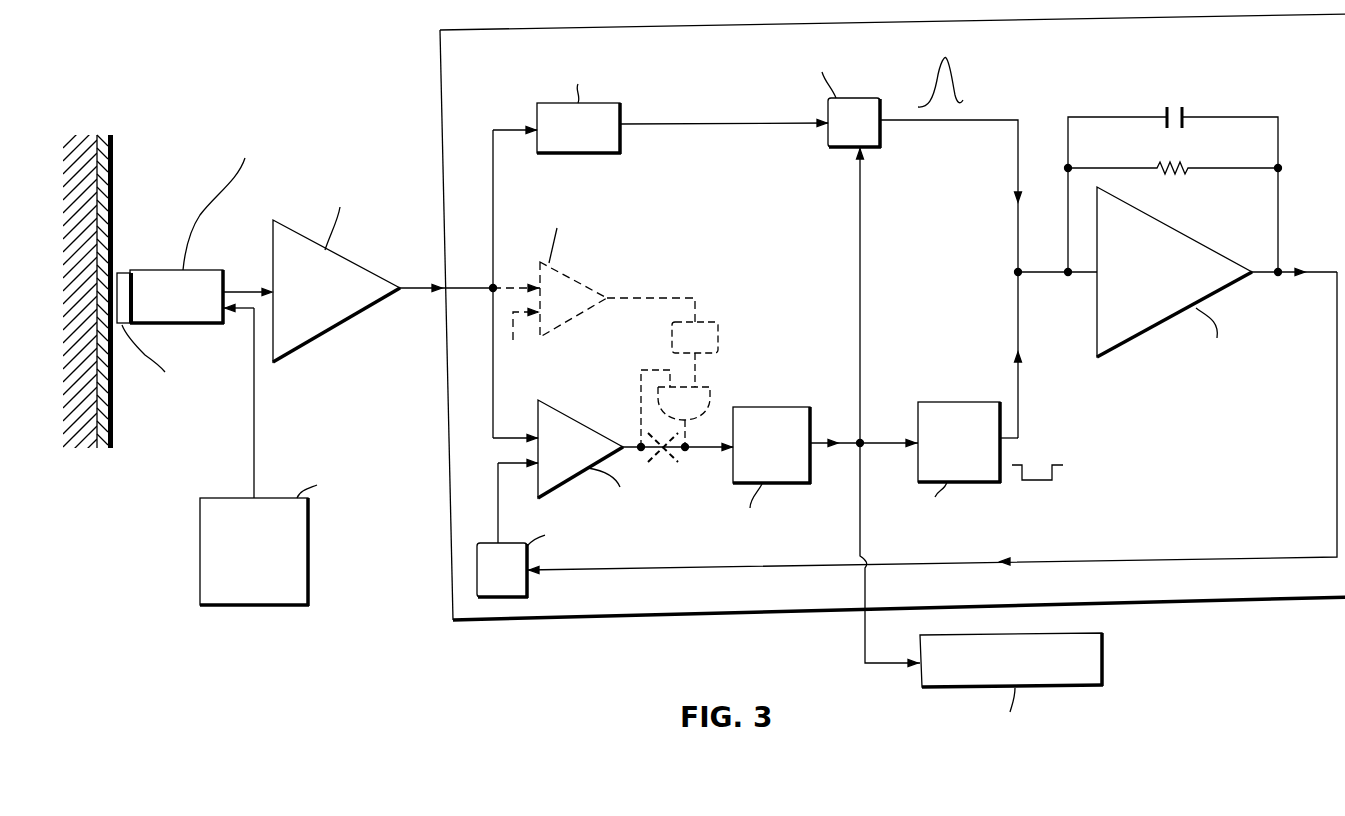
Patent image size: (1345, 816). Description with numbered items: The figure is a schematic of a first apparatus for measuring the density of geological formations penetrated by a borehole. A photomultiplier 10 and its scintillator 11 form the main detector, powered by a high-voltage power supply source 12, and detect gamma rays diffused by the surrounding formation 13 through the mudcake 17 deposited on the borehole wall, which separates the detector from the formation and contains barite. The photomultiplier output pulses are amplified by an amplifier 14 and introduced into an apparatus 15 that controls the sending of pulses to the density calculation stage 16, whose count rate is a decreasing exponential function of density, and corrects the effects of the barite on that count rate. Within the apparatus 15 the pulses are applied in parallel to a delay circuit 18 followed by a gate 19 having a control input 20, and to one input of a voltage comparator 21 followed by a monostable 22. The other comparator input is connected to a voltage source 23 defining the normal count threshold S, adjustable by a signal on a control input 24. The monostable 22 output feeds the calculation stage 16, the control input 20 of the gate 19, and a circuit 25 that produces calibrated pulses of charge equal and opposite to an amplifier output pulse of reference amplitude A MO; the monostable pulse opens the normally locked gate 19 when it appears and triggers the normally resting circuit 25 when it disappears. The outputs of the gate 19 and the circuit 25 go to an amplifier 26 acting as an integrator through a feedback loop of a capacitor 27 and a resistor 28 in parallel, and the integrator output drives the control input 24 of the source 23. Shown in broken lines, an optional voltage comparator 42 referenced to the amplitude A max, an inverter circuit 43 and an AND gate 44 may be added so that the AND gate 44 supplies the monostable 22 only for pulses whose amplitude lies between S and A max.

The photomultiplier 10 is at (221, 233).
The scintillator 11 is at (125, 272).
The high-voltage power supply source 12 is at (273, 457).
The surrounding formation 13 is at (80, 444).
The amplifier 14 is at (383, 275).
The apparatus 15 is at (441, 90).
The density calculation stage 16 is at (1011, 690).
The mudcake 17 is at (113, 217).
The delay circuit 18 is at (660, 109).
The gate 19 is at (909, 246).
The control input 20 is at (860, 160).
The voltage comparator 21 is at (613, 453).
The monostable 22 is at (779, 470).
The voltage source 23 is at (543, 530).
The control input 24 is at (527, 582).
The circuit 25 is at (961, 471).
The amplifier 26 is at (1177, 280).
The capacitor 27 is at (1185, 112).
The resistor 28 is at (1168, 172).
The voltage comparator 42 is at (570, 275).
The inverter circuit 43 is at (715, 322).
The AND gate 44 is at (712, 395).